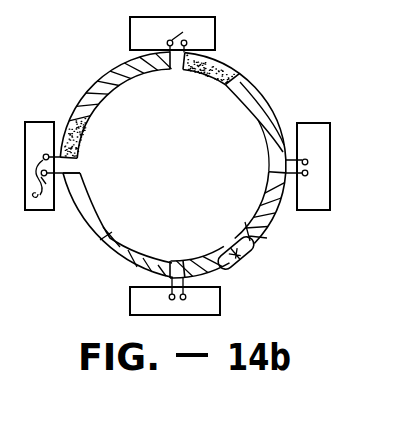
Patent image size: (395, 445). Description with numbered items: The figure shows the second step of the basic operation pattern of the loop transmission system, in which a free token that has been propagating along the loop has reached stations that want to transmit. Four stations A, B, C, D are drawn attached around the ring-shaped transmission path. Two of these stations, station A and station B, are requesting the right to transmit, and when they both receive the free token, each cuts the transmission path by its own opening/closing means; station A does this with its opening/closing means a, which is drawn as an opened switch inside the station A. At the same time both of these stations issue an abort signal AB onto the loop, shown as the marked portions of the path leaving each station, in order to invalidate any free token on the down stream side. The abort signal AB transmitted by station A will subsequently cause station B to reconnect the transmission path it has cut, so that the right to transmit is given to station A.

The station A is at (52, 166).
The station B is at (172, 35).
The terminal unit C is at (308, 166).
The terminal unit D is at (175, 296).
The abort signal AB is at (70, 131).
The opening/closing means a is at (34, 195).